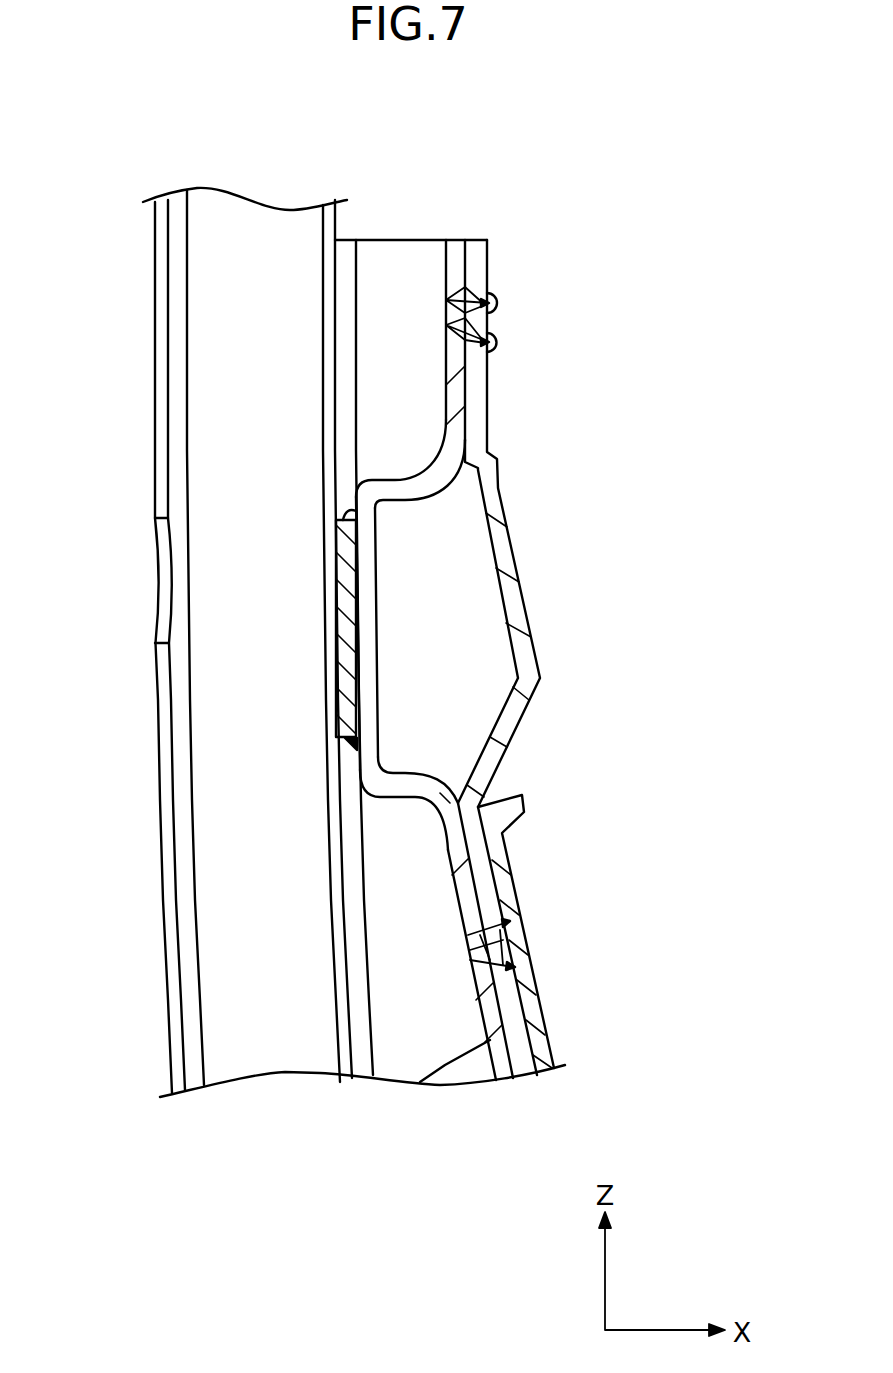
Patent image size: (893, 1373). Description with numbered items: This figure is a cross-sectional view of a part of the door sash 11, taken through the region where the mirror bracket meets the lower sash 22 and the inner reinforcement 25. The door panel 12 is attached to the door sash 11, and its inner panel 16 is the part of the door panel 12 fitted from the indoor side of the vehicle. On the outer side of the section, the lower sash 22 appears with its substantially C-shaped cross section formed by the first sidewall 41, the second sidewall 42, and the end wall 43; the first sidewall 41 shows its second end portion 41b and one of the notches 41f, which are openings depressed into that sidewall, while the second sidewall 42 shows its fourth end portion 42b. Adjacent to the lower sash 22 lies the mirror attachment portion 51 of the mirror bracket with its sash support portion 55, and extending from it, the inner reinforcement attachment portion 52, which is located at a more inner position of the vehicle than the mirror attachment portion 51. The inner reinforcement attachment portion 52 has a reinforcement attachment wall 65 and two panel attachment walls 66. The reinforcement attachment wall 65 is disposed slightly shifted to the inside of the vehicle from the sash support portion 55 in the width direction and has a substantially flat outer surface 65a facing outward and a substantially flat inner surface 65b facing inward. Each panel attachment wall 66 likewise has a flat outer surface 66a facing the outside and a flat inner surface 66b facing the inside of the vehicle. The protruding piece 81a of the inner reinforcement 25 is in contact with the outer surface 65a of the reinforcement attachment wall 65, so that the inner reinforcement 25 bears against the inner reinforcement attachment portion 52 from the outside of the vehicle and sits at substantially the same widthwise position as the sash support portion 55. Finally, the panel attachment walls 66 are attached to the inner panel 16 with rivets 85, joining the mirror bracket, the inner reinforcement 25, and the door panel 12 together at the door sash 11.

The door sash 11 is at (90, 112).
The door panel 12 is at (555, 657).
The inner panel 16 is at (510, 578).
The lower sash 22 is at (146, 238).
The inner reinforcement 25 is at (326, 540).
The first sidewall 41 is at (156, 320).
The second end portion 41b is at (158, 378).
The notch 41f is at (162, 581).
The second sidewall 42 is at (323, 228).
The fourth end portion 42b is at (333, 210).
The end wall 43 is at (238, 212).
The mirror attachment portion 51 is at (345, 243).
The sash support portion 55 is at (391, 610).
The inner reinforcement attachment portion 52 is at (465, 230).
The reinforcement attachment wall 65 is at (368, 592).
The outer surface 65a is at (347, 700).
The inner surface 65b is at (380, 682).
The panel attachment wall 66 is at (455, 397).
The outer surface 66a is at (438, 258).
The inner surface 66b is at (470, 258).
The protruding piece 81a is at (347, 660).
The rivet 85 is at (495, 330).